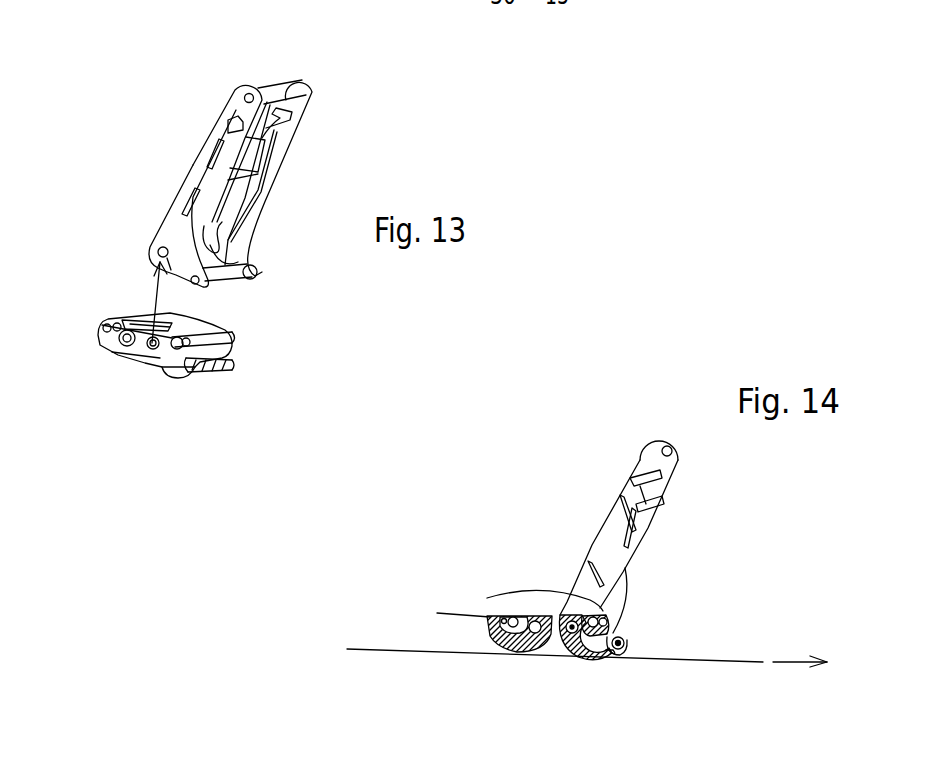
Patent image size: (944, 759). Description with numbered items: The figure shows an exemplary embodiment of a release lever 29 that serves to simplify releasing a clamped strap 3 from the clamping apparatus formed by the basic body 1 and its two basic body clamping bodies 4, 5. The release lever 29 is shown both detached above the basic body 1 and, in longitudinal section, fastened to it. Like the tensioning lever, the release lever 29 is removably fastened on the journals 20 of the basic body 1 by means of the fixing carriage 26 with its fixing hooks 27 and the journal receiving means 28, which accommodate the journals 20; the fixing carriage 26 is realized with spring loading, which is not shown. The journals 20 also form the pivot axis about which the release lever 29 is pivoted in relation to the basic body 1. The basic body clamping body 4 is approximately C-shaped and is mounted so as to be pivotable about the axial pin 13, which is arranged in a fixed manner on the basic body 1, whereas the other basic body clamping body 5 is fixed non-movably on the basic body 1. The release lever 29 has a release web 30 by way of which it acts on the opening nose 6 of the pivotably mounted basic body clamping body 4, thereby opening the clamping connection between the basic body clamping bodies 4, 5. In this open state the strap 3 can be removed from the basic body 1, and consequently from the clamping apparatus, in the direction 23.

In FIG. 13, the basic body 1 is at (112, 359).
In FIG. 14, the strap 3 is at (523, 592).
In FIG. 13, the basic body clamping body 4 is at (177, 375).
In FIG. 14, the basic body clamping body 4 is at (580, 645).
In FIG. 13, the basic body clamping body 5 is at (228, 337).
In FIG. 14, the basic body clamping body 5 is at (603, 618).
In FIG. 13, the opening nose 6 is at (232, 372).
In FIG. 14, the opening nose 6 is at (608, 656).
In FIG. 14, the axial pin 13 is at (560, 627).
In FIG. 13, the journals 20 is at (153, 349).
In FIG. 14, the direction 23 is at (797, 661).
In FIG. 13, the fixing carriage 26 is at (245, 177).
In FIG. 14, the fixing carriage 26 is at (632, 525).
In FIG. 13, the fixing hooks 27 is at (224, 243).
In FIG. 13, the journal receiving means 28 is at (157, 250).
In FIG. 13, the release lever 29 is at (235, 128).
In FIG. 14, the release lever 29 is at (648, 458).
In FIG. 13, the release web 30 is at (244, 276).
In FIG. 14, the release web 30 is at (623, 640).